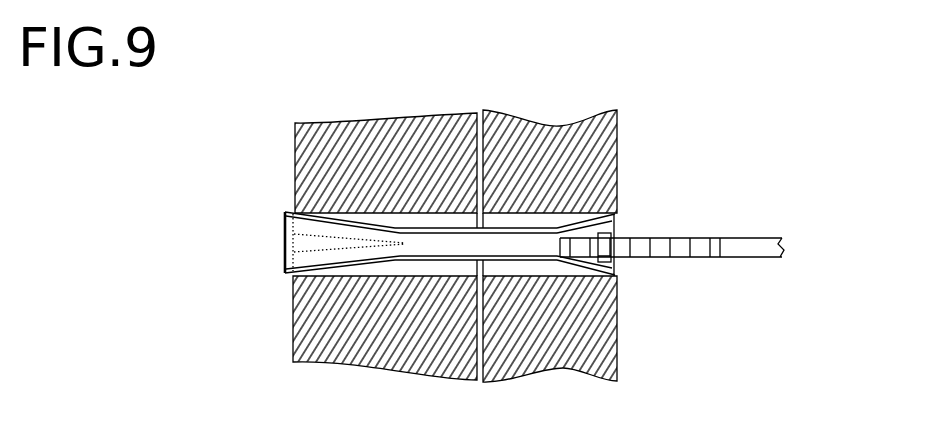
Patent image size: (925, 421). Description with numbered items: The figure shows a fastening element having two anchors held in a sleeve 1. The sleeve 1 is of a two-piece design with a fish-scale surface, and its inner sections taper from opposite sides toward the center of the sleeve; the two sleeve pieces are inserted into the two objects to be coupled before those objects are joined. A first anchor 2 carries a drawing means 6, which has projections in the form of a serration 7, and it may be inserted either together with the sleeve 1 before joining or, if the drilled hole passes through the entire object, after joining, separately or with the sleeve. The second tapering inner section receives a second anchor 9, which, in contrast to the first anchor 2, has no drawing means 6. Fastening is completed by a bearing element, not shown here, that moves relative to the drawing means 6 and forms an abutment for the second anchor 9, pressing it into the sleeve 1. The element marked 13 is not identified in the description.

The sleeve 1 is at (520, 208).
The first anchor 2 is at (268, 240).
The sleeve end portion 13 is at (608, 207).
The drawing means 6 is at (797, 252).
The serration 7 is at (670, 236).
The second anchor 9 is at (622, 267).